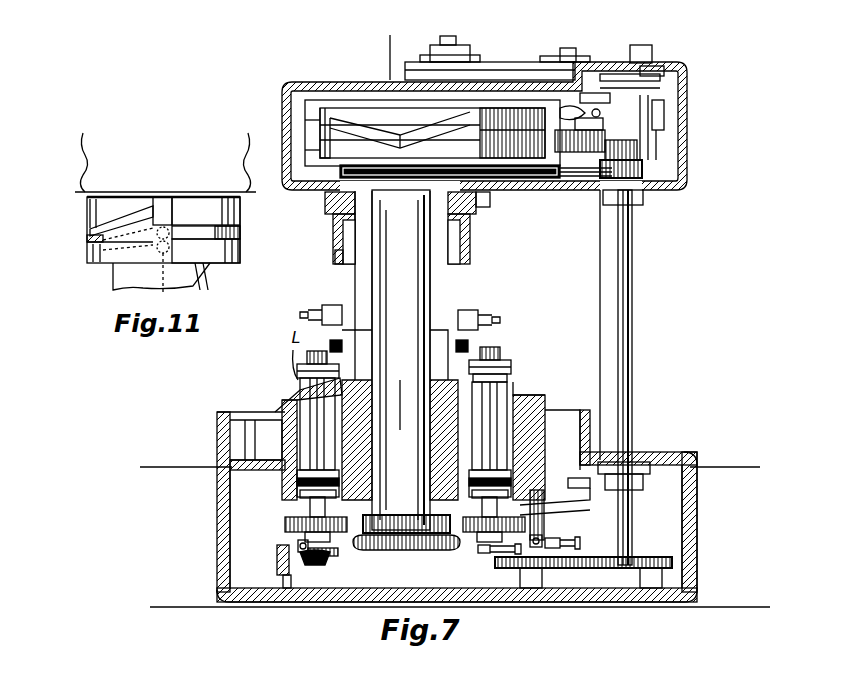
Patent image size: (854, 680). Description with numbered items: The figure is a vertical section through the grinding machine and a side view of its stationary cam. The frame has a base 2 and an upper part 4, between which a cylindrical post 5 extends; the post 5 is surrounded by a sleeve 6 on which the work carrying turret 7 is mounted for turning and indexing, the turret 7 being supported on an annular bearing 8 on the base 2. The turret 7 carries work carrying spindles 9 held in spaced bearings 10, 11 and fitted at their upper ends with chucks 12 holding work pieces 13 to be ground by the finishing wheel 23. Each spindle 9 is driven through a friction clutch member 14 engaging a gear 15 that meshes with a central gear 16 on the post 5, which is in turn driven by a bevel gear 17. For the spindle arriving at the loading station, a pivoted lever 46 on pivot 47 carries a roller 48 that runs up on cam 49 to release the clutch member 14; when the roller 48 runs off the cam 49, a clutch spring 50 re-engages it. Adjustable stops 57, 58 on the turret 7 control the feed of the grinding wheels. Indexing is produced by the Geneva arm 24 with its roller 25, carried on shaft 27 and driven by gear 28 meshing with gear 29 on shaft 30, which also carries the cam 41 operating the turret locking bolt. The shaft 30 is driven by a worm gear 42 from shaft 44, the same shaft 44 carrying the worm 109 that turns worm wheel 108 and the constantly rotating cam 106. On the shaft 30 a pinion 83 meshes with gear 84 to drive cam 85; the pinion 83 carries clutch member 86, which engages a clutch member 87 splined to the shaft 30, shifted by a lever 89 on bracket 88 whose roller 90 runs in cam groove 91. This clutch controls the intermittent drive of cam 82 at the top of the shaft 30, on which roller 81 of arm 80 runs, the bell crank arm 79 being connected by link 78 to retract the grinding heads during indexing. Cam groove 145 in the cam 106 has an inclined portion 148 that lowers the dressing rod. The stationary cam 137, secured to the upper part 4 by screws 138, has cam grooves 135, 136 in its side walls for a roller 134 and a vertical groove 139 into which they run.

In FIG. 7, the base 2 is at (305, 602).
In FIG. 11, the upper part 4 is at (88, 164).
In FIG. 7, the upper part 4 is at (282, 114).
In FIG. 7, the cylindrical post 5 is at (401, 360).
In FIG. 7, the sleeve 6 is at (150, 460).
In FIG. 7, the work carrying turret 7 is at (526, 391).
In FIG. 7, the annular bearing 8 is at (382, 50).
In FIG. 7, the work carrying spindle 9 is at (310, 430).
In FIG. 7, the bearing 10 is at (298, 498).
In FIG. 7, the bearing 11 is at (291, 368).
In FIG. 7, the chuck 12 is at (510, 376).
In FIG. 7, the work piece 13 is at (317, 354).
In FIG. 7, the friction clutch member 14 is at (302, 532).
In FIG. 7, the gear 15 is at (288, 517).
In FIG. 7, the central gear 16 is at (398, 514).
In FIG. 7, the bevel gear 17 is at (368, 553).
In FIG. 7, the finishing wheel 23 is at (470, 350).
In FIG. 7, the indexing arm 24 is at (558, 508).
In FIG. 7, the roller 25 is at (586, 482).
In FIG. 7, the shaft 27 is at (578, 547).
In FIG. 7, the gear 28 is at (568, 568).
In FIG. 7, the gear 29 is at (655, 568).
In FIG. 7, the shaft 30 is at (632, 292).
In FIG. 7, the cam 41 is at (654, 474).
In FIG. 7, the worm gear 42 is at (642, 163).
In FIG. 7, the shaft 44 is at (522, 193).
In FIG. 7, the pivoted lever 46 is at (292, 564).
In FIG. 7, the pivot 47 is at (312, 557).
In FIG. 7, the roller 48 is at (296, 544).
In FIG. 7, the cam 49 is at (277, 562).
In FIG. 7, the clutch spring 50 is at (301, 578).
In FIG. 7, the adjustable stop 57 is at (304, 317).
In FIG. 7, the adjustable stop 58 is at (502, 320).
In FIG. 7, the link 78 is at (516, 64).
In FIG. 7, the arm 79 is at (606, 60).
In FIG. 7, the arm 80 is at (662, 92).
In FIG. 7, the roller 81 is at (664, 70).
In FIG. 7, the cam 82 is at (662, 63).
In FIG. 7, the pinion 83 is at (637, 151).
In FIG. 7, the gear 84 is at (555, 132).
In FIG. 7, the cam 85 is at (580, 98).
In FIG. 7, the clutch member 86 is at (648, 130).
In FIG. 7, the clutch member 87 is at (649, 149).
In FIG. 7, the bracket 88 is at (567, 65).
In FIG. 7, the lever 89 is at (596, 109).
In FIG. 7, the roller 90 is at (575, 128).
In FIG. 7, the cam groove 91 is at (560, 114).
In FIG. 7, the cam 106 is at (328, 100).
In FIG. 7, the worm wheel 108 is at (340, 173).
In FIG. 7, the worm 109 is at (483, 194).
In FIG. 11, the roller 134 is at (176, 221).
In FIG. 11, the cam groove 135 is at (90, 241).
In FIG. 7, the cam groove 135 is at (335, 258).
In FIG. 11, the cam groove 136 is at (240, 229).
In FIG. 7, the cam groove 136 is at (470, 238).
In FIG. 11, the stationary cam 137 is at (240, 257).
In FIG. 7, the stationary cam 137 is at (333, 229).
In FIG. 7, the screw 138 is at (325, 210).
In FIG. 11, the vertical groove 139 is at (173, 207).
In FIG. 7, the cam groove 145 is at (308, 108).
In FIG. 7, the inclined portion 148 is at (412, 116).